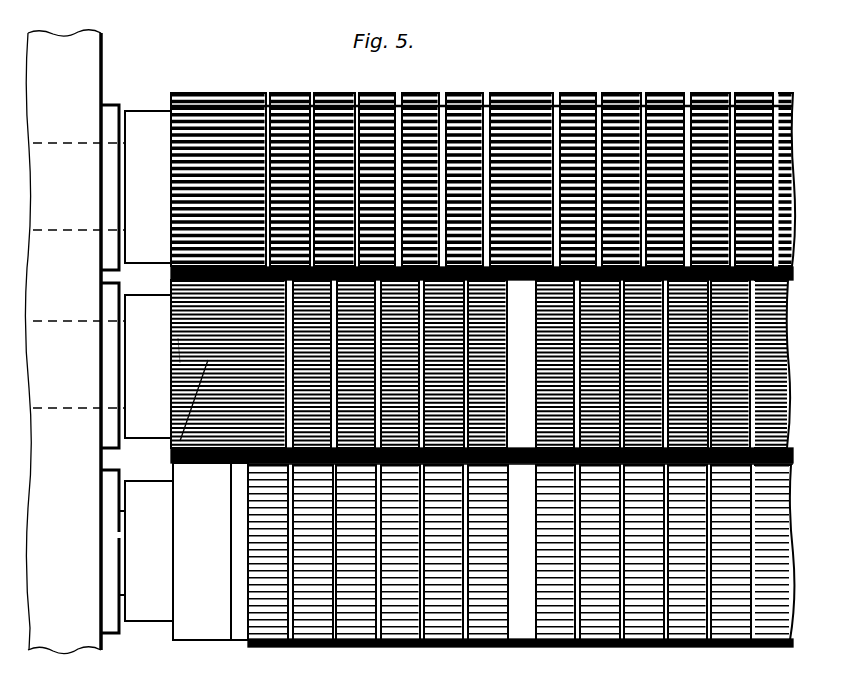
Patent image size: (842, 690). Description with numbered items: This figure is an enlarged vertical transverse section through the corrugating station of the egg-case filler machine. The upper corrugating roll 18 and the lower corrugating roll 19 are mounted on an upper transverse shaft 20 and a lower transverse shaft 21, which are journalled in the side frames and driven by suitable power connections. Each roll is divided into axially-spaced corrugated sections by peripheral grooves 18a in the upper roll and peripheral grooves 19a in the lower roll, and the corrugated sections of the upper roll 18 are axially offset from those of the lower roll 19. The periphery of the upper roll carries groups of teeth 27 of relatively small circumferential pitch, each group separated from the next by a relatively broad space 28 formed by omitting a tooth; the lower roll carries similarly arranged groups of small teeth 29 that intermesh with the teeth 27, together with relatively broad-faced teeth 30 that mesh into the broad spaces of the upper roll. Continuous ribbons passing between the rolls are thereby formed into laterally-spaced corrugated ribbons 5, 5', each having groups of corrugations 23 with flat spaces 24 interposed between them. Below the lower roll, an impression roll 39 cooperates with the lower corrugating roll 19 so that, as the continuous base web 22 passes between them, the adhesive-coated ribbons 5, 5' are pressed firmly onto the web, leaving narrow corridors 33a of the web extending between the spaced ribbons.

The corrugated ribbon 5 is at (467, 371).
The corrugated ribbon 5' is at (521, 364).
The upper corrugating roll 18 is at (136, 187).
The peripheral grooves 18a is at (347, 84).
The lower corrugating roll 19 is at (136, 365).
The peripheral grooves 19a is at (280, 457).
The upper transverse shaft 20 is at (63, 342).
The lower transverse shaft 21 is at (62, 402).
The base web 22 is at (516, 640).
The groups of corrugations 23 is at (250, 612).
The flat spaces 24 is at (255, 473).
The teeth 27 is at (458, 97).
The broad space 28 is at (612, 175).
The small teeth 29 is at (172, 355).
The broad-faced teeth 30 is at (166, 442).
The narrow corridors 33a is at (370, 640).
The impression roll 39 is at (182, 622).